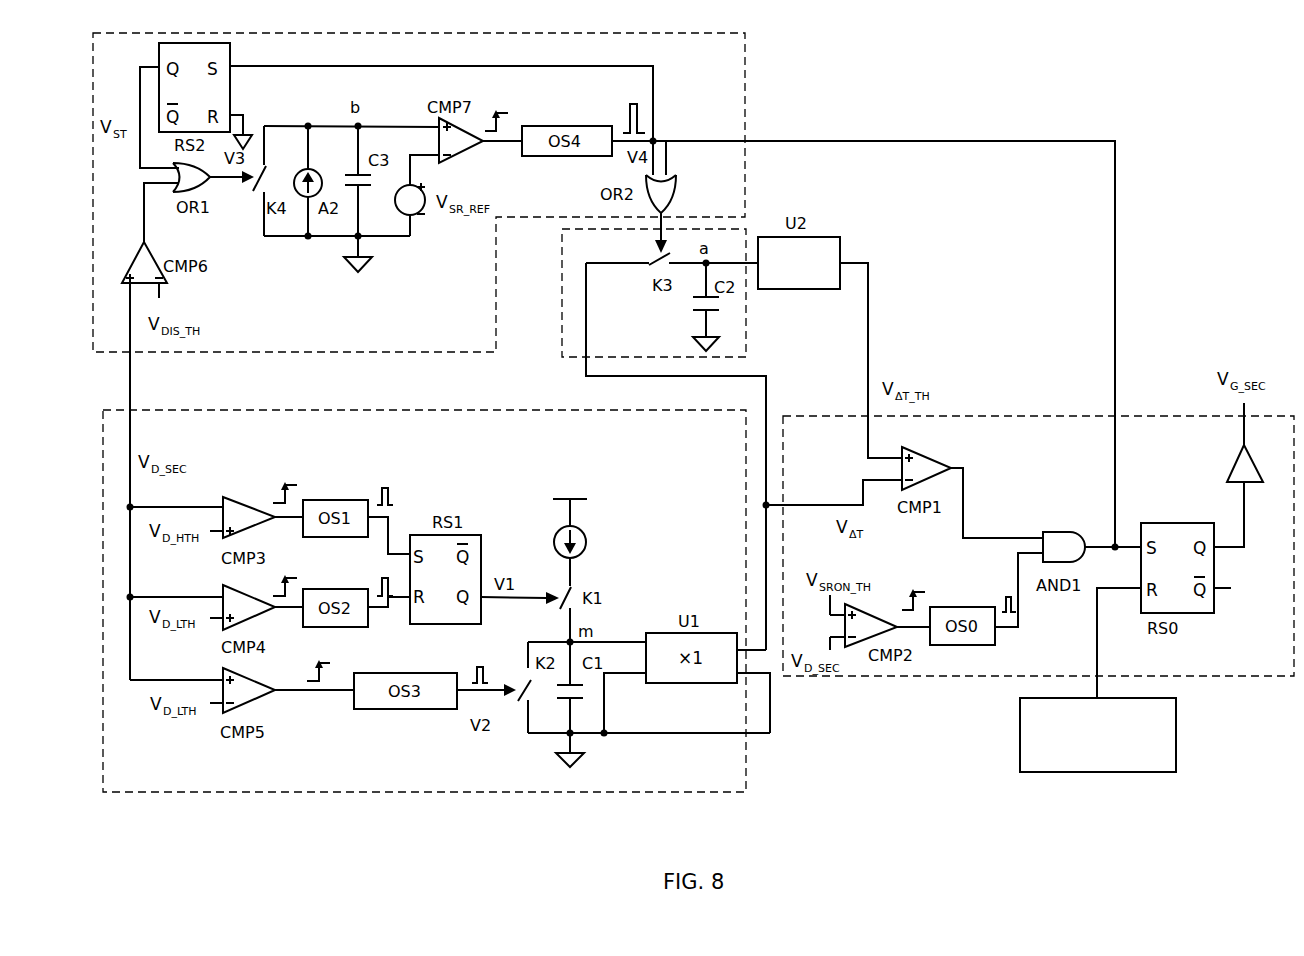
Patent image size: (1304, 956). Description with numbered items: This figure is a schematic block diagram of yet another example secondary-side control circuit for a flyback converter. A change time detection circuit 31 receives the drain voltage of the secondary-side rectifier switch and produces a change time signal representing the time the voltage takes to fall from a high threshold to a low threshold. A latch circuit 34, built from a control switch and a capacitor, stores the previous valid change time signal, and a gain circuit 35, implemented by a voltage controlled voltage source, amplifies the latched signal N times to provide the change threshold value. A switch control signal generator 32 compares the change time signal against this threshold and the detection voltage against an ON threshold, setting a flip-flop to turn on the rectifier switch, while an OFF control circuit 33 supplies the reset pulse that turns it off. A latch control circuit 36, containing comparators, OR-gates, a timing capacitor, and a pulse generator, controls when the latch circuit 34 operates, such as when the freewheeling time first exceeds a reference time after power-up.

The change time detection circuit 31 is at (557, 410).
The switch control signal generator 32 is at (1082, 416).
The OFF control circuit 33 is at (1085, 772).
The latch circuit 34 is at (562, 290).
The gain circuit 35 is at (810, 289).
The latch control circuit 36 is at (747, 132).